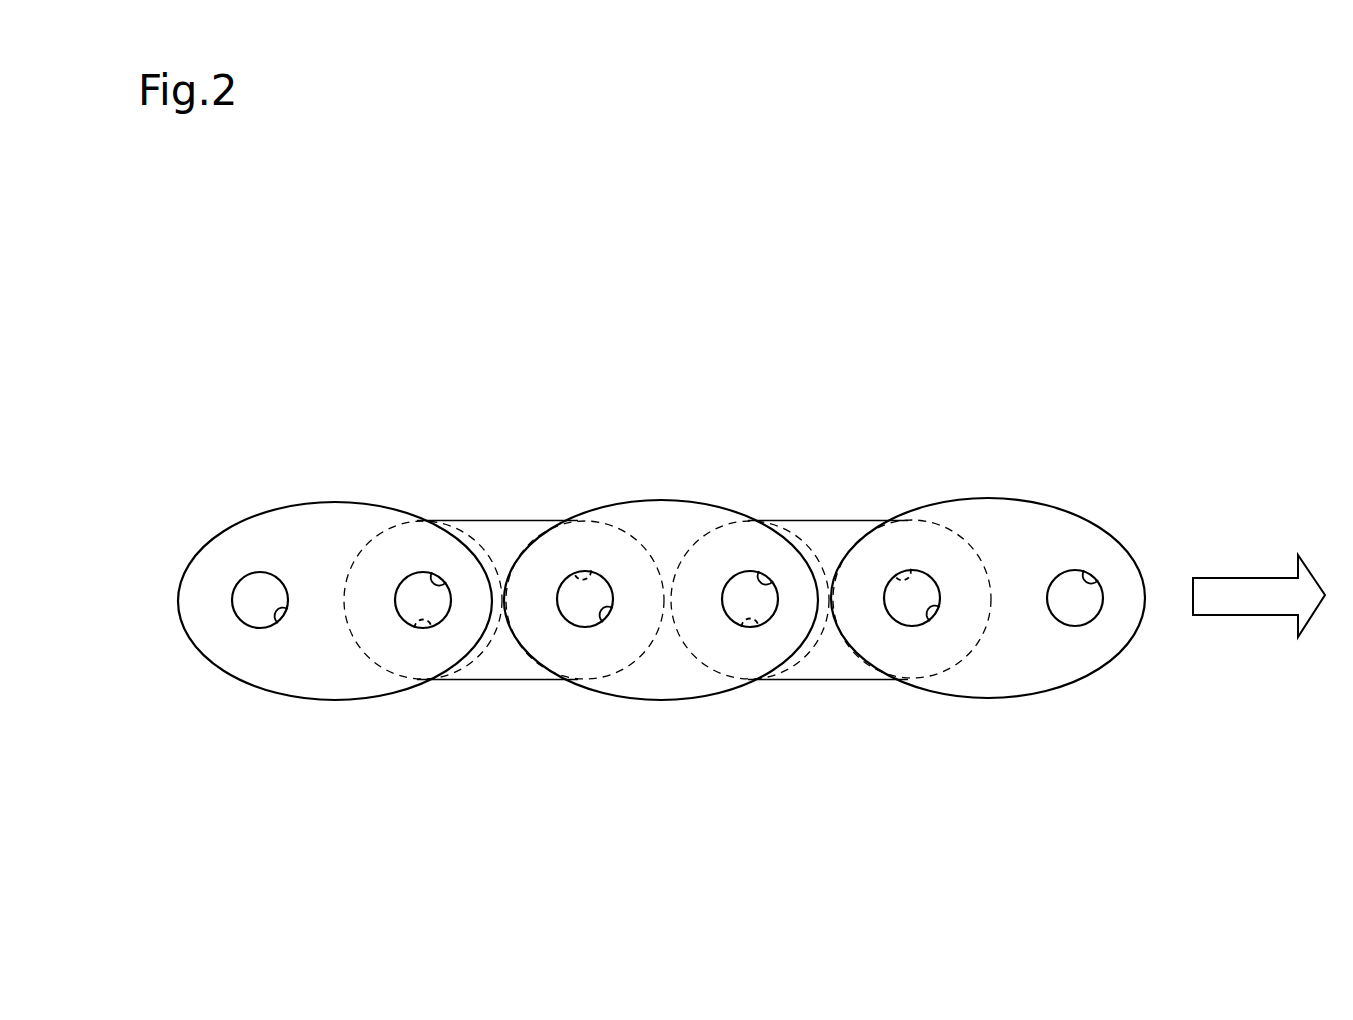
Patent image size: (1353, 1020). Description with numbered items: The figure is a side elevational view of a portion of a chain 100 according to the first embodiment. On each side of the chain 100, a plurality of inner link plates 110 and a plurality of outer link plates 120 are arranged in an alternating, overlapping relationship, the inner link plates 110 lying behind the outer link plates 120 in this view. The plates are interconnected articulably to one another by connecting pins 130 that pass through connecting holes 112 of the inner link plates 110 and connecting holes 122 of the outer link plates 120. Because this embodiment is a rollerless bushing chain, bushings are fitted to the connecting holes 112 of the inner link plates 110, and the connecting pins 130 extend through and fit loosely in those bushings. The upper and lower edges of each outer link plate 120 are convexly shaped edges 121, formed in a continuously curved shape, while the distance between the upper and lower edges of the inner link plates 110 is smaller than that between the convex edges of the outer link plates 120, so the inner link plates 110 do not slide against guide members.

The chain 100 is at (318, 300).
The inner link plate 110 is at (490, 658).
The connecting hole 112 is at (570, 574).
The outer link plate 120 is at (661, 598).
The convexly shaped edge 121 is at (343, 500).
The connecting hole 122 is at (436, 576).
The connecting pin 130 is at (413, 583).